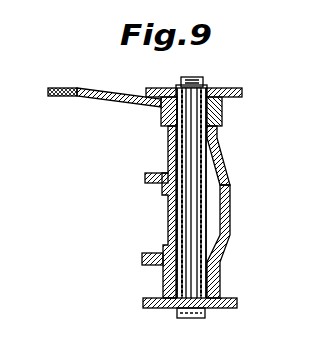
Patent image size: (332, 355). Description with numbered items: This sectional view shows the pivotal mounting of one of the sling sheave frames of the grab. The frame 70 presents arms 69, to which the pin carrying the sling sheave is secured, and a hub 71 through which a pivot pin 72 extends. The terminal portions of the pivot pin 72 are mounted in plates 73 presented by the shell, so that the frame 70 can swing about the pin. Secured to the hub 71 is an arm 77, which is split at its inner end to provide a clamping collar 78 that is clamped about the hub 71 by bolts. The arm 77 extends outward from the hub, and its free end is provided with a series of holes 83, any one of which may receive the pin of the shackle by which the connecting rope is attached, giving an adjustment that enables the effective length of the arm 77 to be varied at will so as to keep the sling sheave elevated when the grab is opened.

The arms 69 is at (150, 175).
The frame 70 is at (233, 241).
The hub 71 is at (226, 148).
The pivot pin 72 is at (194, 78).
The plates 73 is at (218, 91).
The arm 77 is at (97, 93).
The clamping collar 78 is at (224, 118).
The holes 83 is at (58, 96).